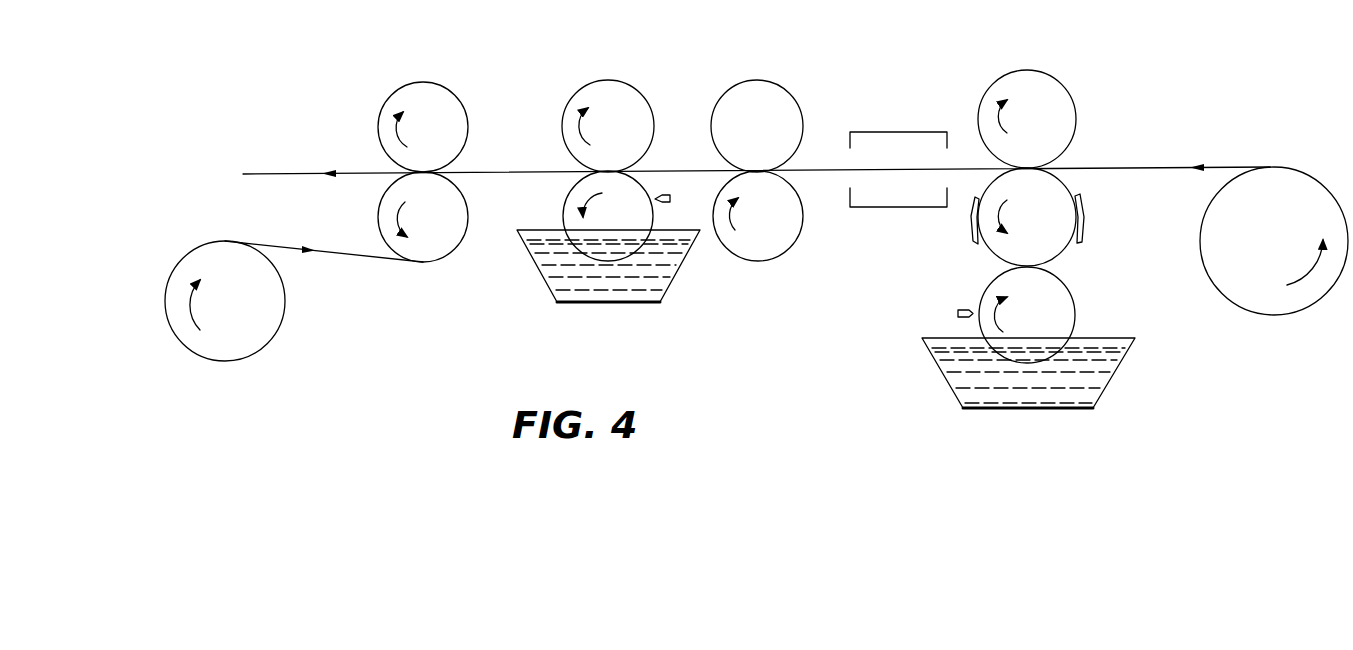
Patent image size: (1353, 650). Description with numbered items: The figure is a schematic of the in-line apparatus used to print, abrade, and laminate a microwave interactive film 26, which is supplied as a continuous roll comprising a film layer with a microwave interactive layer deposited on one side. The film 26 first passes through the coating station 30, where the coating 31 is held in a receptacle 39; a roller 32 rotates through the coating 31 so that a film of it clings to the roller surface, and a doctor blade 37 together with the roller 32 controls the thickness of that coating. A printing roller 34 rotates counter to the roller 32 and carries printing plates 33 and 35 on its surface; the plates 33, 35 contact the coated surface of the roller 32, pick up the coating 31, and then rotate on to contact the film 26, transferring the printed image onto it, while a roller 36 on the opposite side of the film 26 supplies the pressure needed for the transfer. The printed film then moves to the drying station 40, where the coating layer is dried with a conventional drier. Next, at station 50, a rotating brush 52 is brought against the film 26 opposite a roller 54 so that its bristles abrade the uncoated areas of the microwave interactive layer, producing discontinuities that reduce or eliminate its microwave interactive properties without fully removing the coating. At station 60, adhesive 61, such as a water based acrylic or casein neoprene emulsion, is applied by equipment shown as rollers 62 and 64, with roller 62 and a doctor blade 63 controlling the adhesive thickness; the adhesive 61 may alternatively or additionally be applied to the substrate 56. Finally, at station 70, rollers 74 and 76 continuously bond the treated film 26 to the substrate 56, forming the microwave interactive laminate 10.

The microwave interactive laminate 10 is at (292, 173).
The microwave interactive film 26 is at (1218, 165).
The coating station 30 is at (1034, 247).
The coating 31 is at (1038, 405).
The roller 32 is at (1072, 303).
The printing plate 33 is at (972, 234).
The printing roller 34 is at (1072, 193).
The printing plate 35 is at (1086, 228).
The roller 36 is at (1057, 113).
The doctor blade 37 is at (958, 312).
The receptacle 39 is at (1028, 416).
The drying station 40 is at (902, 117).
The abrading station 50 is at (774, 142).
The rotating brush 52 is at (802, 199).
The roller 54 is at (802, 108).
The substrate 56 is at (330, 253).
The adhesive application station 60 is at (622, 178).
The adhesive 61 is at (667, 292).
The roller 62 is at (651, 190).
The doctor blade 63 is at (668, 202).
The roller 64 is at (655, 124).
The lamination station 70 is at (438, 144).
The roller 74 is at (465, 207).
The roller 76 is at (463, 117).